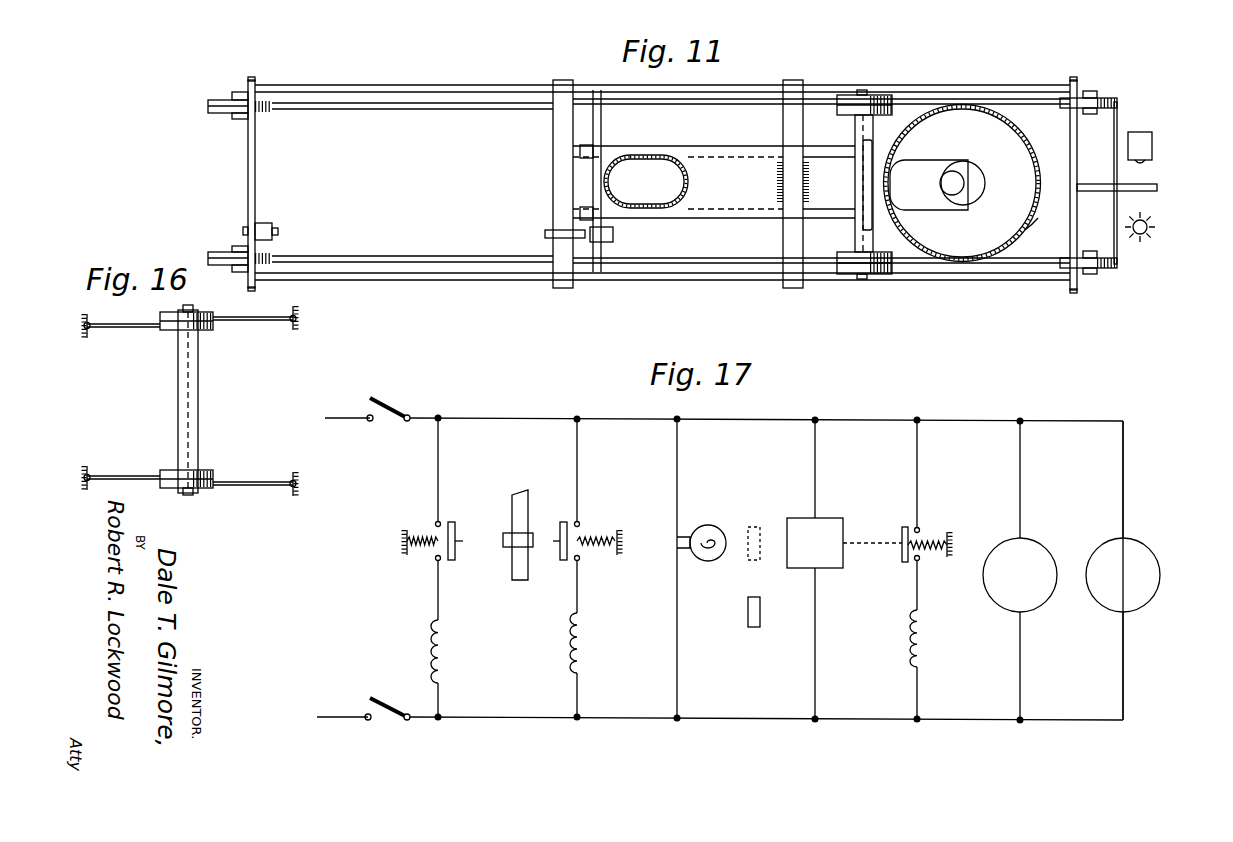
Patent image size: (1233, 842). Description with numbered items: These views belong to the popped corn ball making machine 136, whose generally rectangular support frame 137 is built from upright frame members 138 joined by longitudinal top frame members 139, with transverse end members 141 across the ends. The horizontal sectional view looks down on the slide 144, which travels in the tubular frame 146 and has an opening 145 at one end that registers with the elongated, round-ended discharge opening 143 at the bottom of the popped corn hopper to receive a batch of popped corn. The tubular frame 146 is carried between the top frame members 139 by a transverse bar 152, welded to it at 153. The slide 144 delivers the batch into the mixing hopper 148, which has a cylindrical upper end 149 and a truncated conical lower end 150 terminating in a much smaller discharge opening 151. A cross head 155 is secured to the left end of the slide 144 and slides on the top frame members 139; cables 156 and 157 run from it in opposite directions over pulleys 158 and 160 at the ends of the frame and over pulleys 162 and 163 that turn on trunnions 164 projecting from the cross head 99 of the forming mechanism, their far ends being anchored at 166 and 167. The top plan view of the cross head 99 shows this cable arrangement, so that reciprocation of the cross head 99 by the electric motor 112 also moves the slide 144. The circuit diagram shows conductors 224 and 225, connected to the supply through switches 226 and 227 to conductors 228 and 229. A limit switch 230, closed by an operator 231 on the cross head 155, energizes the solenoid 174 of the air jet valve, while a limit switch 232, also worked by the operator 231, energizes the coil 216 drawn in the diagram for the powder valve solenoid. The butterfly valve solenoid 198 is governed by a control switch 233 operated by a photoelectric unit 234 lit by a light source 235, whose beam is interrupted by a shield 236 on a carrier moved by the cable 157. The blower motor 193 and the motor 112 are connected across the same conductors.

In FIG. 11, the popped corn ball making machine 136 is at (203, 70).
In FIG. 11, the support frame 137 is at (242, 163).
In FIG. 11, the upright frame members 138 is at (250, 78).
In FIG. 11, the longitudinal top frame members 139 is at (432, 85).
In FIG. 11, the transverse end members 141 is at (256, 147).
In FIG. 11, the discharge opening 143 is at (680, 158).
In FIG. 11, the slide 144 is at (553, 166).
In FIG. 11, the opening 145 is at (926, 166).
In FIG. 11, the tubular frame 146 is at (750, 218).
In FIG. 11, the mixing hopper 148 is at (1019, 108).
In FIG. 11, the cylindrical upper end 149 is at (1034, 222).
In FIG. 11, the truncated conical lower end 150 is at (1022, 146).
In FIG. 11, the discharge opening 151 is at (976, 196).
In FIG. 11, the transverse bar 152 is at (790, 129).
In FIG. 11, the weld 153 is at (778, 185).
In FIG. 11, the cross head 155 is at (553, 187).
In FIG. 17, the cross head 155 is at (530, 503).
In FIG. 11, the cable 156 is at (412, 109).
In FIG. 16, the cable 156 is at (138, 328).
In FIG. 11, the cable 157 is at (728, 99).
In FIG. 16, the cable 157 is at (255, 321).
In FIG. 11, the pulley 158 is at (208, 104).
In FIG. 11, the pulley 160 is at (1118, 100).
In FIG. 11, the pulley 162 is at (885, 95).
In FIG. 16, the pulley 162 is at (160, 316).
In FIG. 11, the pulley 163 is at (880, 275).
In FIG. 16, the pulley 163 is at (172, 470).
In FIG. 11, the trunnions 164 is at (860, 90).
In FIG. 16, the trunnions 164 is at (195, 308).
In FIG. 16, the anchorage 166 is at (90, 320).
In FIG. 16, the anchorage 167 is at (308, 312).
In FIG. 11, the cross head 99 is at (855, 231).
In FIG. 16, the cross head 99 is at (199, 390).
In FIG. 17, the solenoid 174 is at (456, 651).
In FIG. 17, the blower motor 193 is at (1040, 540).
In FIG. 17, the butterfly valve solenoid 198 is at (923, 643).
In FIG. 17, the electric motor 112 is at (1150, 547).
In FIG. 17, the relay coil 216 is at (592, 643).
In FIG. 17, the conductor 224 is at (343, 421).
In FIG. 17, the conductor 225 is at (324, 721).
In FIG. 17, the switch 226 is at (386, 420).
In FIG. 17, the switch 227 is at (383, 720).
In FIG. 17, the conductor 228 is at (433, 418).
In FIG. 17, the conductor 229 is at (428, 721).
In FIG. 11, the limit switch 230 is at (272, 227).
In FIG. 17, the limit switch 230 is at (436, 523).
In FIG. 11, the operator 231 is at (545, 232).
In FIG. 17, the operator 231 is at (505, 548).
In FIG. 11, the limit switch 232 is at (601, 242).
In FIG. 17, the limit switch 232 is at (583, 526).
In FIG. 17, the control switch 233 is at (925, 531).
In FIG. 11, the photoelectric unit 234 is at (1152, 147).
In FIG. 17, the photoelectric unit 234 is at (843, 518).
In FIG. 11, the light source 235 is at (1156, 227).
In FIG. 17, the light source 235 is at (712, 525).
In FIG. 11, the shield 236 is at (1157, 188).
In FIG. 17, the shield 236 is at (760, 520).